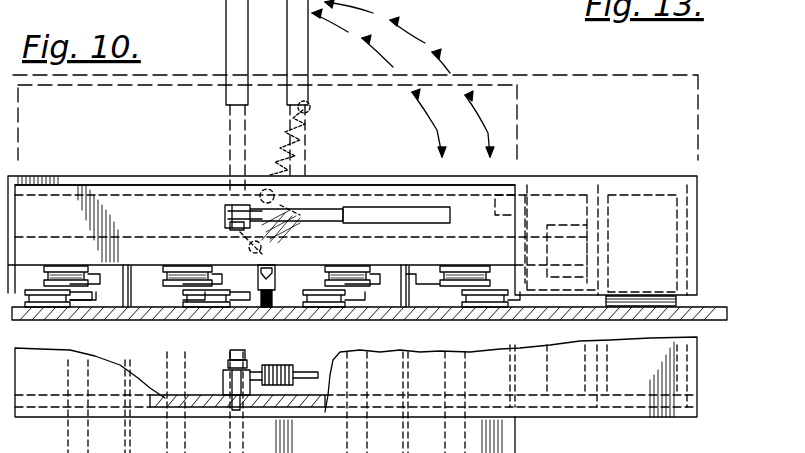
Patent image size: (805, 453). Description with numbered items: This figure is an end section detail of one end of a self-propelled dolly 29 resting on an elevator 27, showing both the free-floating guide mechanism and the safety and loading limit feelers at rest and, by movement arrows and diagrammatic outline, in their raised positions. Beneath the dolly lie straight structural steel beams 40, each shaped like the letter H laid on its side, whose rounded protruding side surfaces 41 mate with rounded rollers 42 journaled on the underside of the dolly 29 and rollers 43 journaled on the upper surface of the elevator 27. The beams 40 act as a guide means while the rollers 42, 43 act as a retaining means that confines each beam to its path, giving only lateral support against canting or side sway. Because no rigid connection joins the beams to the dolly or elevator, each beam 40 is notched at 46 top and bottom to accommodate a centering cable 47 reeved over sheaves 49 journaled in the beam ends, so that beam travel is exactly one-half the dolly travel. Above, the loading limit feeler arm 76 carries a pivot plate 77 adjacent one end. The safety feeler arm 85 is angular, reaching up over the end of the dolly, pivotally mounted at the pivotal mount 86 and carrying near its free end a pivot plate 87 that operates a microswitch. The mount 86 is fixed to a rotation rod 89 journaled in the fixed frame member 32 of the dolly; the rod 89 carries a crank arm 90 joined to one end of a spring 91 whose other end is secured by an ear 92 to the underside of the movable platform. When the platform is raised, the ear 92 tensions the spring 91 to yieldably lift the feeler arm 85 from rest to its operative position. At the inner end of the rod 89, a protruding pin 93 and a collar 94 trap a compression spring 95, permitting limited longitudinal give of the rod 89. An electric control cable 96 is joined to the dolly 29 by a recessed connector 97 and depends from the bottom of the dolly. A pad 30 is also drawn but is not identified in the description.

The elevator 27 is at (175, 320).
The dolly 29 is at (700, 88).
The pad 30 is at (676, 300).
The fixed frame member 32 is at (515, 428).
The free-floating beam 40 is at (98, 307).
The protruding side surfaces 41 is at (108, 278).
The rollers 42 is at (62, 268).
The rollers 43 is at (40, 308).
The notch 46 is at (128, 268).
The centering cable 47 is at (126, 308).
The sheaves 49 is at (131, 308).
The feeler arm 76 is at (306, 140).
The pivot plate 77 is at (308, 38).
The safety feeler arm 85 is at (230, 130).
The pivotal mount 86 is at (243, 204).
The pivot plate 87 is at (226, 12).
The rotation rod 89 is at (230, 222).
The crank arm 90 is at (263, 188).
The spring 91 is at (278, 160).
The ear 92 is at (312, 103).
The protruding pin 93 is at (230, 352).
The collar 94 is at (223, 382).
The compression spring 95 is at (247, 362).
The electric control cable 96 is at (267, 307).
The recessed connector 97 is at (275, 274).